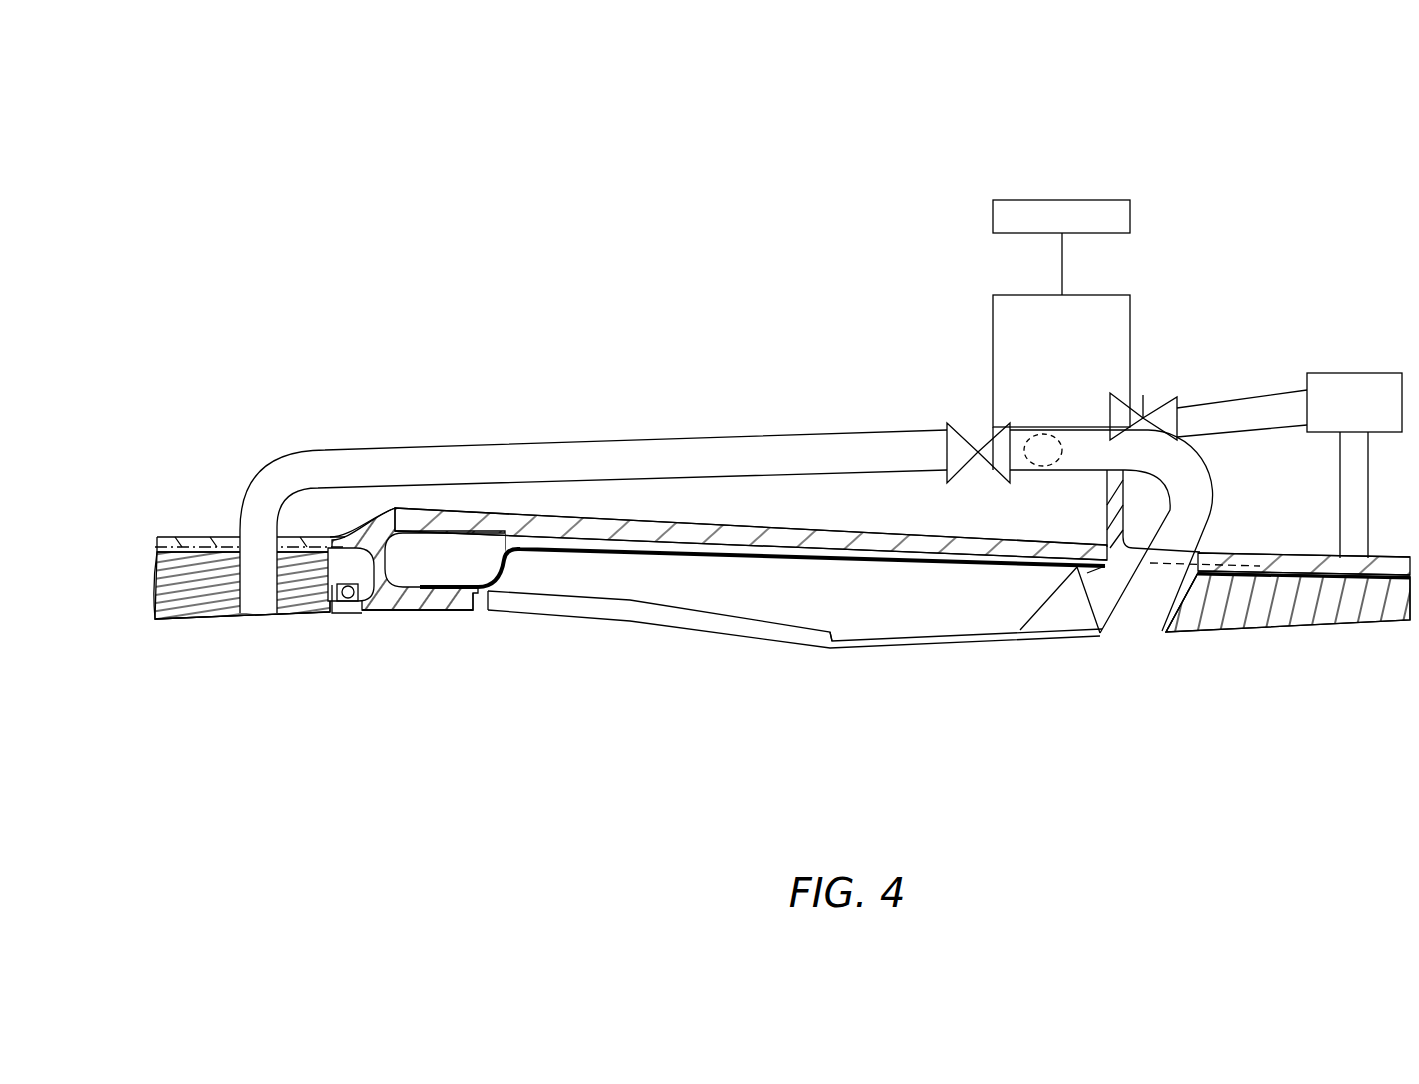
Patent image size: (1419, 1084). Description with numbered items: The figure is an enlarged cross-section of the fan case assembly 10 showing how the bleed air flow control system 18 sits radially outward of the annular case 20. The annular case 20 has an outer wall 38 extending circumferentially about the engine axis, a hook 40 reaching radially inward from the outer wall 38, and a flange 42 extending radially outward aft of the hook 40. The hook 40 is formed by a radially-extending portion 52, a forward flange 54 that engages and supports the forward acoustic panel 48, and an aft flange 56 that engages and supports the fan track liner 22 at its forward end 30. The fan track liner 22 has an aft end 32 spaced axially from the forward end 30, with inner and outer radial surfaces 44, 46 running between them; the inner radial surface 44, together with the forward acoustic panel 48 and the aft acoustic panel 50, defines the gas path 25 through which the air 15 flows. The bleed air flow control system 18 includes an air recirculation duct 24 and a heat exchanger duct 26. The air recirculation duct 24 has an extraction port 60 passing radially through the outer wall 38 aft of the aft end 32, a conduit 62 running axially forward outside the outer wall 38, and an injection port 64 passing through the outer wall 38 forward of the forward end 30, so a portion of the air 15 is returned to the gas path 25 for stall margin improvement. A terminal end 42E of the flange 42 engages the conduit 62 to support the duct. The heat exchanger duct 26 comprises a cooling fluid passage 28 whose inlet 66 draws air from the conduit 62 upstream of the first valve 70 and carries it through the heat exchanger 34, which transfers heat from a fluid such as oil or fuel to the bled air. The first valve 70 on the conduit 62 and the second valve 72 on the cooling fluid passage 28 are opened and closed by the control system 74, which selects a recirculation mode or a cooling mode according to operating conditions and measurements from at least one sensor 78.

The fan case assembly 10 is at (325, 267).
The air 15 is at (500, 793).
The bleed air flow control system 18 is at (1282, 140).
The annular case 20 is at (909, 510).
The fan track liner 22 is at (784, 668).
The air recirculation duct 24 is at (830, 420).
The gas path 25 is at (600, 740).
The heat exchanger duct 26 is at (1392, 280).
The cooling fluid passage 28 is at (1275, 378).
The forward end 30 is at (512, 593).
The aft end 32 is at (1092, 573).
The heat exchanger 34 is at (1373, 364).
The outer wall 38 is at (835, 512).
The hook 40 is at (400, 628).
The flange 42 is at (1053, 503).
The terminal end 42E is at (1100, 633).
The inner radial surface 44 is at (663, 616).
The outer radial surface 46 is at (688, 533).
The forward acoustic panel 48 is at (176, 633).
The aft acoustic panel 50 is at (1255, 646).
The radially-extending portion 52 is at (402, 554).
The forward flange 54 is at (355, 626).
The aft flange 56 is at (442, 622).
The extraction port 60 is at (1187, 587).
The conduit 62 is at (728, 428).
The injection port 64 is at (208, 583).
The inlet 66 is at (1045, 433).
The first valve 70 is at (978, 421).
The second valve 72 is at (1141, 394).
The control system 74 is at (1072, 198).
The sensor 78 is at (1010, 198).